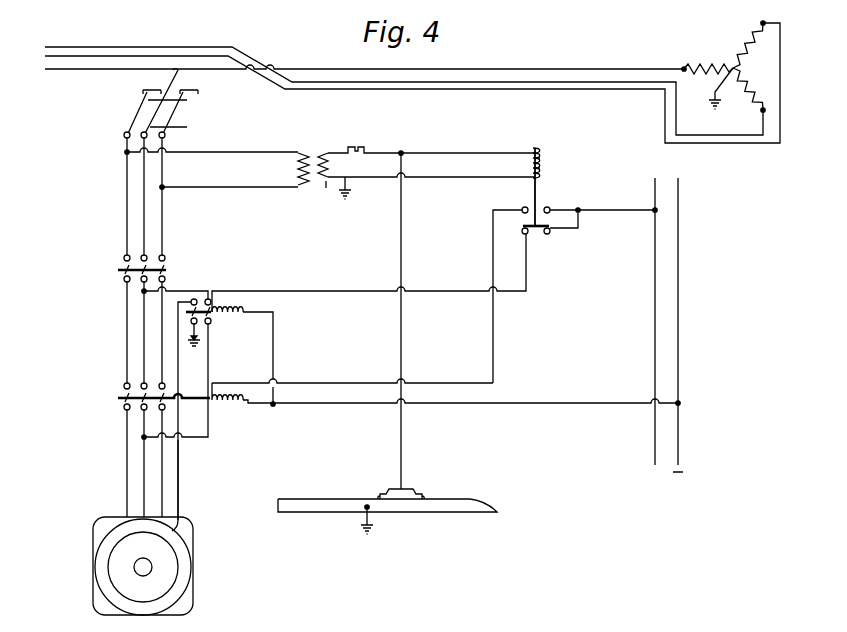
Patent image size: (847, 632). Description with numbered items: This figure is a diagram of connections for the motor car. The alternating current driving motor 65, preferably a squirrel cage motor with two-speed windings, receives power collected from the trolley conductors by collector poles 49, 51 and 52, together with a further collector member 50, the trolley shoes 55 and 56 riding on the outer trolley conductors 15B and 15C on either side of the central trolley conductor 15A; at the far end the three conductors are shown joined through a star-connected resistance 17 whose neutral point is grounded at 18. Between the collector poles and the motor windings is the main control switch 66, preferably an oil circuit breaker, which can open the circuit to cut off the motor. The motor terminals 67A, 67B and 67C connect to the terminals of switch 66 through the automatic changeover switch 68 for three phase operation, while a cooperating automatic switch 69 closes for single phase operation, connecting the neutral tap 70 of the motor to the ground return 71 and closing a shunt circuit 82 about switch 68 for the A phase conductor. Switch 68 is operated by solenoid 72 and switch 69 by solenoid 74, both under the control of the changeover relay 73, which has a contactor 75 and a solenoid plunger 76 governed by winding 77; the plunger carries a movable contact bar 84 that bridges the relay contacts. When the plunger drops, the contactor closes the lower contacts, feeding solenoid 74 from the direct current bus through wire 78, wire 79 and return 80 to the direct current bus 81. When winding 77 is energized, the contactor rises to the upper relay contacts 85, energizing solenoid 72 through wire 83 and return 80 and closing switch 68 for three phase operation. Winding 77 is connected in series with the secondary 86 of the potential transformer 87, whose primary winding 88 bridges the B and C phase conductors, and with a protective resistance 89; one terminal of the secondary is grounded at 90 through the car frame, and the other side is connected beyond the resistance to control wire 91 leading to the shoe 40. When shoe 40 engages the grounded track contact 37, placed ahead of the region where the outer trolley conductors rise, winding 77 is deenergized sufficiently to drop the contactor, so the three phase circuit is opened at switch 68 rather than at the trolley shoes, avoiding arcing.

The central trolley conductor 15A is at (477, 69).
The trolley conductor 15B is at (424, 84).
The trolley conductor 15C is at (496, 90).
The star-connected resistors 17 is at (723, 60).
The ground connection 18 is at (712, 92).
The track contact 37 is at (403, 507).
The shoe 40 is at (410, 490).
The collector pole 49 is at (187, 128).
The switch blade 50 is at (181, 69).
The collector pole 51 is at (178, 110).
The collector pole 52 is at (139, 110).
The trolley shoe 55 is at (146, 88).
The trolley shoe 56 is at (192, 88).
The alternating current driving motor 65 is at (93, 550).
The main control switch 66 is at (118, 268).
The motor terminal 67A is at (142, 450).
The motor terminal 67B is at (126, 472).
The motor terminal 67C is at (160, 503).
The automatic changeover switch 68 is at (118, 394).
The automatic switch 69 is at (254, 313).
The neutral tap 70 is at (180, 468).
The return 71 is at (198, 334).
The solenoid 72 is at (233, 404).
The changeover relay 73 is at (530, 149).
The solenoid 74 is at (233, 309).
The contactor 75 is at (546, 224).
The solenoid plunger 76 is at (541, 151).
The winding 77 is at (545, 161).
The wire 78 is at (413, 291).
The wire 79 is at (275, 347).
The return 80 is at (461, 410).
The direct current bus 81 is at (681, 375).
The shunt circuit 82 is at (173, 291).
The wire 83 is at (496, 325).
The movable contact bridge 84 is at (547, 235).
The upper relay contacts 85 is at (522, 207).
The secondary 86 is at (335, 193).
The potential transformer 87 is at (318, 152).
The primary winding 88 is at (297, 176).
The protective resistance 89 is at (359, 148).
The ground 90 is at (348, 181).
The control wire 91 is at (404, 330).